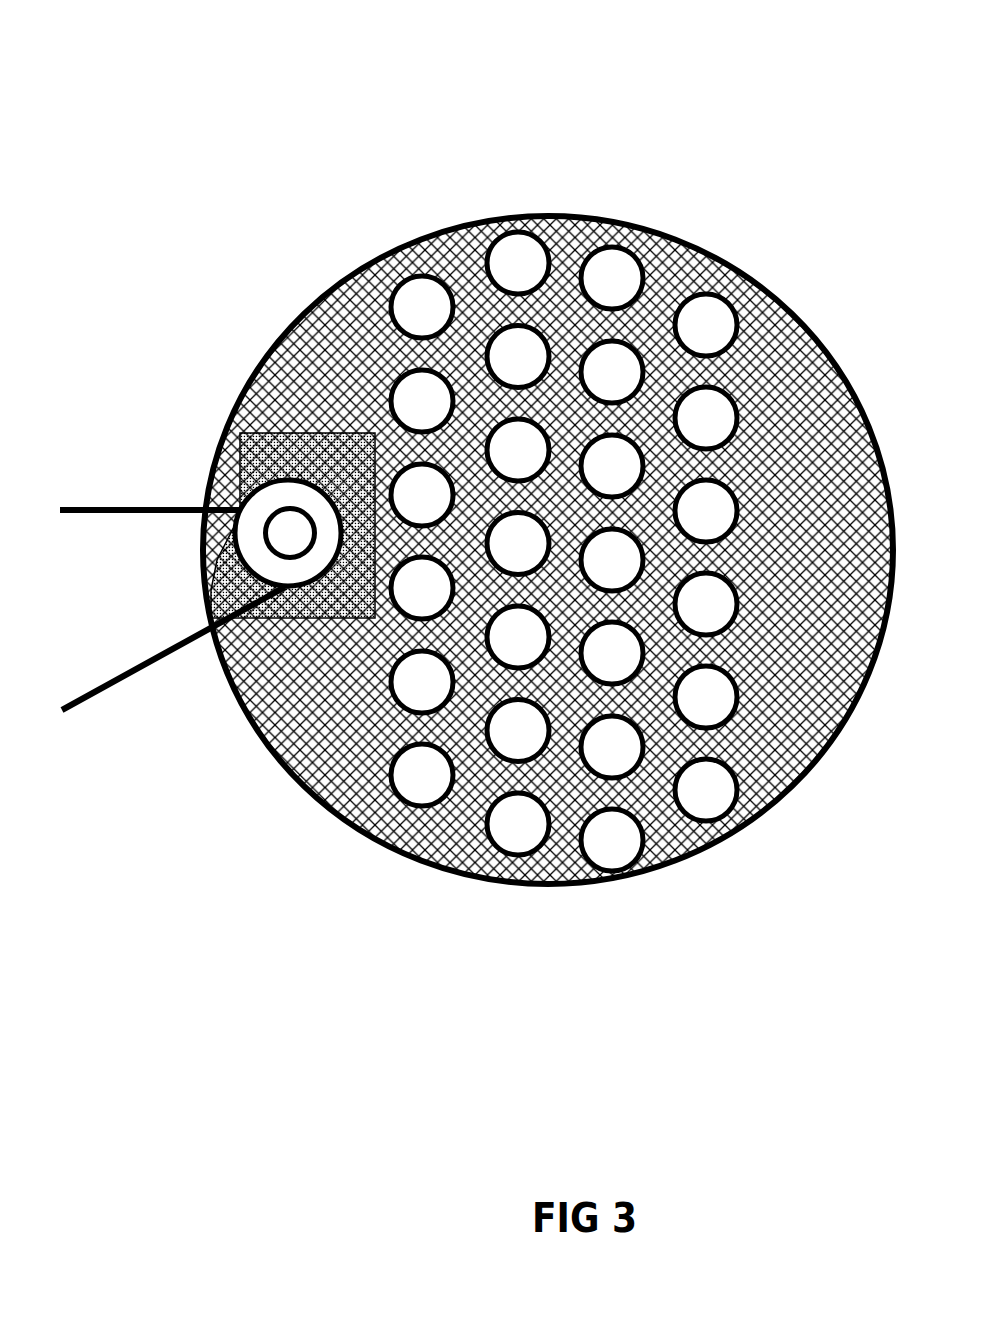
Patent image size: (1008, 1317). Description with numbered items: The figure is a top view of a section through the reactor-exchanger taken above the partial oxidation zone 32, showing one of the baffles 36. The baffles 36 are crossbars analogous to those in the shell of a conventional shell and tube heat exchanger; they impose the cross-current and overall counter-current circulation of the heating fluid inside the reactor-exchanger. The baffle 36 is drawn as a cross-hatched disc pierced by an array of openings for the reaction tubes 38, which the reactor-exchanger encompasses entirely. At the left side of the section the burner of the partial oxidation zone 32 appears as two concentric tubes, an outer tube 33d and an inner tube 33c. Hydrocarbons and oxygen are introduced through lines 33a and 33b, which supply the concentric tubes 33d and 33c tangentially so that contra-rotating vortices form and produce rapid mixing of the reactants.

The baffles 36 is at (795, 400).
The reaction tubes 38 is at (572, 888).
The partial oxidation zone 32 is at (328, 603).
The line 33a is at (95, 698).
The line 33b is at (127, 507).
The concentric tube 33c is at (263, 542).
The concentric tube 33d is at (245, 497).